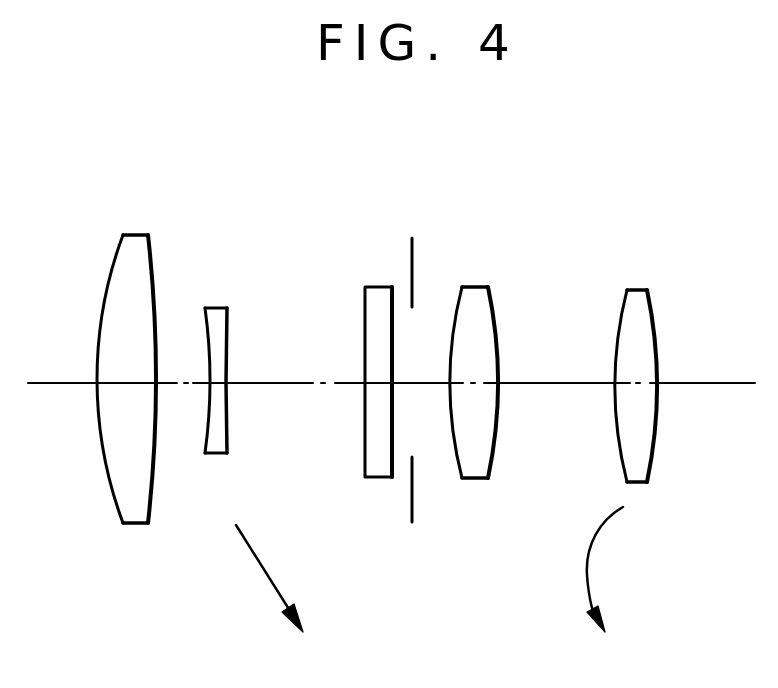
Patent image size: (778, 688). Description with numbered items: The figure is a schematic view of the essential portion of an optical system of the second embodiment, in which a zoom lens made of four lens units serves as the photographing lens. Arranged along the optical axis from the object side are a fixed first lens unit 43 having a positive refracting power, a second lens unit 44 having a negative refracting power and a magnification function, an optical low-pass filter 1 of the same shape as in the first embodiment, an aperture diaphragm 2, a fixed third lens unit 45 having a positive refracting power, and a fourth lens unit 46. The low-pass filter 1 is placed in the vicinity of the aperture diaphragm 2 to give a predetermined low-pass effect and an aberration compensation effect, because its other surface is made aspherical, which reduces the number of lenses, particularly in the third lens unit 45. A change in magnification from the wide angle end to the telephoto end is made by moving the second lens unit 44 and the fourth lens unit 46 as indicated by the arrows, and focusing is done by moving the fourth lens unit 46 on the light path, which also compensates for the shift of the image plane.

The first lens unit 43 is at (135, 235).
The second lens unit 44 is at (220, 308).
The optical low-pass filter 1 is at (375, 287).
The aperture diaphragm 2 is at (410, 253).
The third lens unit 45 is at (475, 287).
The fourth lens unit 46 is at (635, 290).